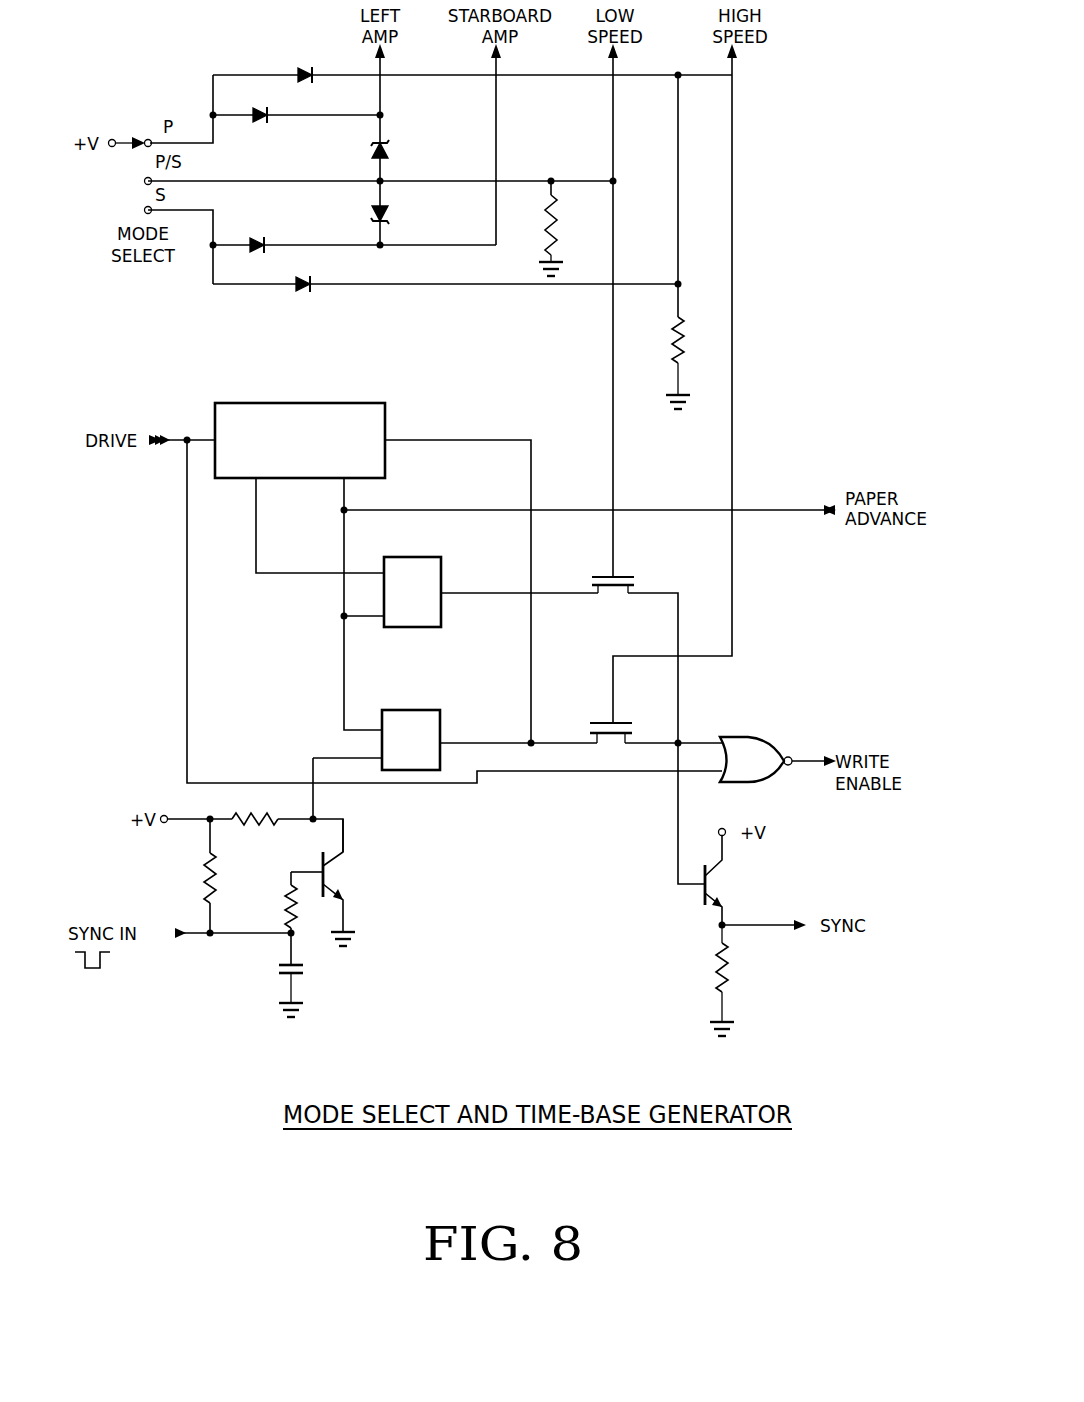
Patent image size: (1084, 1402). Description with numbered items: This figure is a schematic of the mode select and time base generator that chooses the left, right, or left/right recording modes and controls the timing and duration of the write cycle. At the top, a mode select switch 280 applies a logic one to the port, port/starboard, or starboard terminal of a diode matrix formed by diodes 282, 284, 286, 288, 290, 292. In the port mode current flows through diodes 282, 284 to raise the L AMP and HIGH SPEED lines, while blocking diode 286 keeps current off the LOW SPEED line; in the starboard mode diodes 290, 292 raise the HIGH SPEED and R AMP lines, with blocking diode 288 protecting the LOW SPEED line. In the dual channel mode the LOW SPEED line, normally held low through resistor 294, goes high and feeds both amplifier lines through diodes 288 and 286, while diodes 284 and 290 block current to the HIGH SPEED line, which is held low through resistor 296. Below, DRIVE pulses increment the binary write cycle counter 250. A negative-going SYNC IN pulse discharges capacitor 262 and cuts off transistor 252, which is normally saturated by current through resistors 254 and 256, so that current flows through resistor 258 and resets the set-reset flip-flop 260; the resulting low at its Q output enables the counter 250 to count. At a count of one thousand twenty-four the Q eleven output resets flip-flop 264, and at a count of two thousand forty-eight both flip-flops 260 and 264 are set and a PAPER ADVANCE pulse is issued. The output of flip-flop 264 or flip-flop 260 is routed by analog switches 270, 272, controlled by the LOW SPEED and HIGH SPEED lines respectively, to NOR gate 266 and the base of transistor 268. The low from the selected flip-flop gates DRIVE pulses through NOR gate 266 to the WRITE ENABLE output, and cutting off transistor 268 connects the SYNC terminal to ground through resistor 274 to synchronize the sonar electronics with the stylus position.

The write cycle counter 250 is at (388, 413).
The transistor 252 is at (345, 862).
The resistor 254 is at (200, 870).
The resistor 256 is at (284, 904).
The resistor 258 is at (265, 828).
The set-reset flip-flop 260 is at (443, 717).
The capacitor 262 is at (283, 977).
The flip-flop 264 is at (444, 563).
The NOR gate 266 is at (765, 737).
The transistor 268 is at (700, 895).
The analog switch 270 is at (618, 578).
The analog switch 272 is at (606, 722).
The resistor 274 is at (712, 965).
The mode select switch 280 is at (122, 140).
The diode 282 is at (302, 68).
The diode 284 is at (262, 124).
The blocking diode 286 is at (391, 148).
The blocking diode 288 is at (391, 212).
The diode 290 is at (257, 237).
The diode 292 is at (300, 292).
The resistor 294 is at (557, 226).
The resistor 296 is at (670, 352).